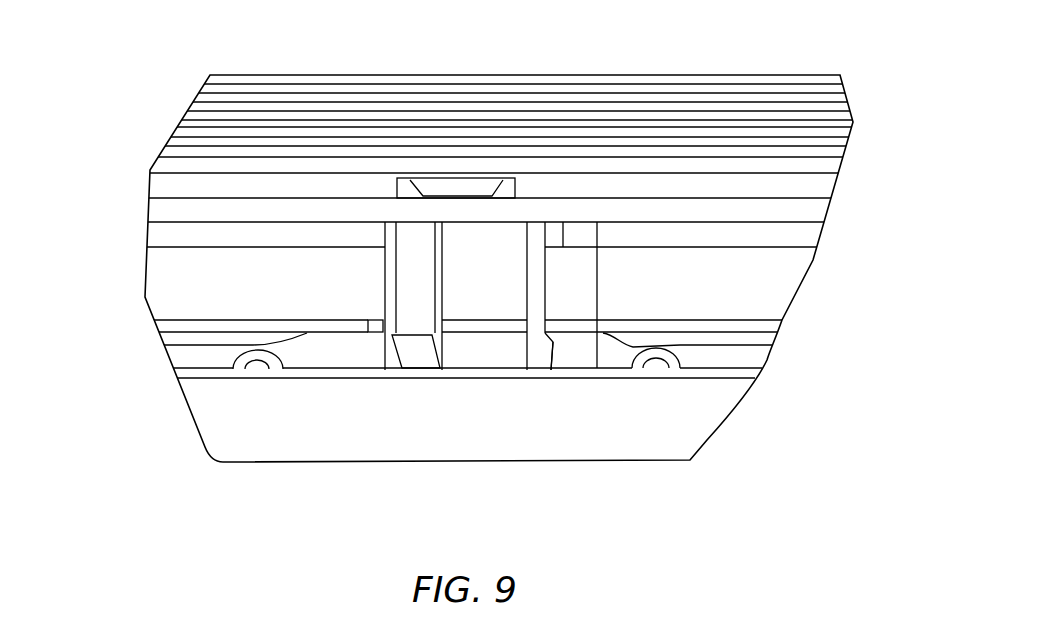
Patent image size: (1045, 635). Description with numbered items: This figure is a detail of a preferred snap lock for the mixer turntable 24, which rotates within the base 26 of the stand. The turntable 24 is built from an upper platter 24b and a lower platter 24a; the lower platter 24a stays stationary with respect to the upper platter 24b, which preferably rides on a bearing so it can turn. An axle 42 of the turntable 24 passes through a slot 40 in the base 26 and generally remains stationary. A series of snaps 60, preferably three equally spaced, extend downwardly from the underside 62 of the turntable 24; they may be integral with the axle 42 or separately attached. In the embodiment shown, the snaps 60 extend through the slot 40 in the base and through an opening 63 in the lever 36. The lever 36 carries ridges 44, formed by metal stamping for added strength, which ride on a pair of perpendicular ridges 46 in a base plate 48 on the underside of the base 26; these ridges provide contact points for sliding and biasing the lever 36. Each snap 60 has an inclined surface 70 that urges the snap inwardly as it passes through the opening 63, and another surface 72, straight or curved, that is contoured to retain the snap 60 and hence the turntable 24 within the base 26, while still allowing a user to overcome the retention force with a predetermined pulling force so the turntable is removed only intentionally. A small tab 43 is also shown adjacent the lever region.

The turntable 24 is at (173, 163).
The lower platter 24a is at (828, 183).
The upper platter 24b is at (220, 103).
The base 26 is at (805, 230).
The lever 36 is at (335, 333).
The slot 40 is at (553, 227).
The axle 42 is at (407, 184).
The tab 43 is at (377, 322).
The ridges 44 is at (210, 340).
The perpendicular ridges 46 is at (233, 367).
The base plate 48 is at (632, 383).
The snaps 60 is at (550, 322).
The underside of the turntable 62 is at (180, 223).
The opening 63 is at (490, 327).
The inclined surface 70 is at (548, 355).
The surface 72 is at (557, 335).